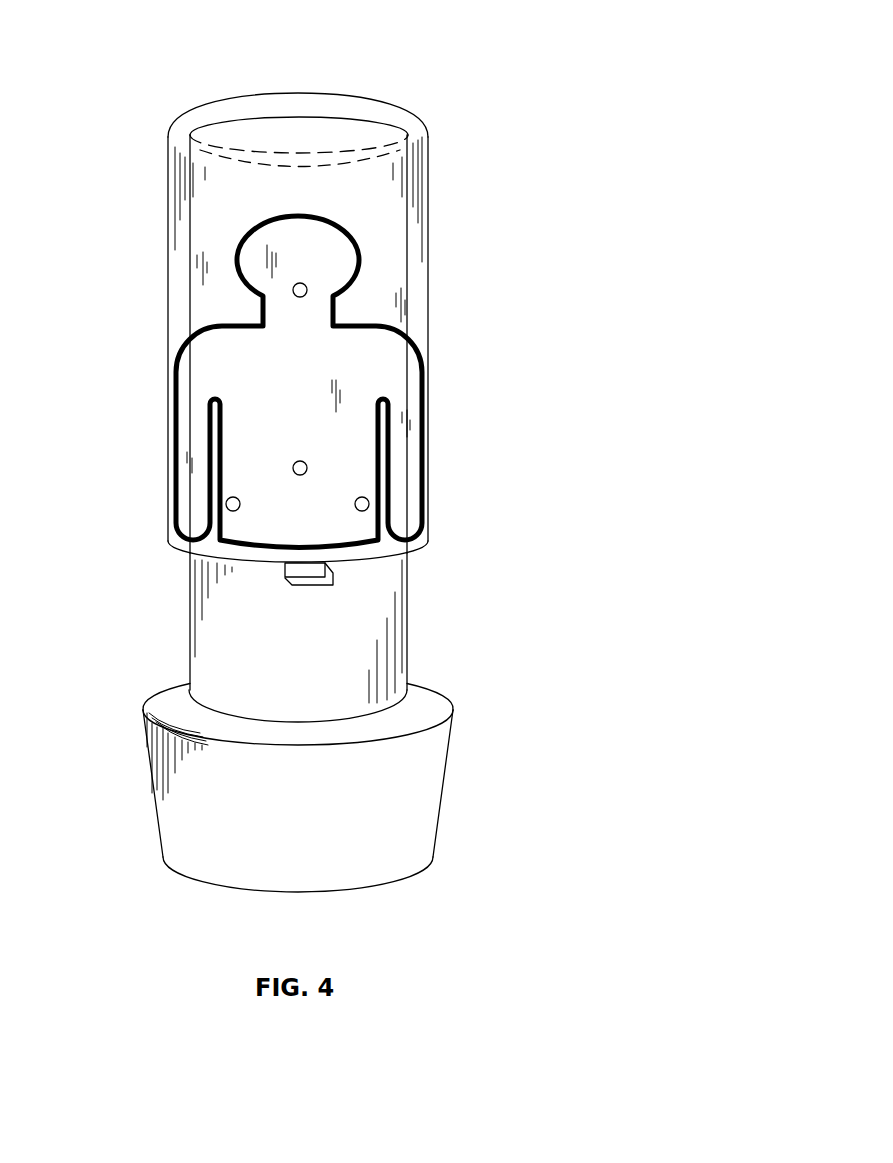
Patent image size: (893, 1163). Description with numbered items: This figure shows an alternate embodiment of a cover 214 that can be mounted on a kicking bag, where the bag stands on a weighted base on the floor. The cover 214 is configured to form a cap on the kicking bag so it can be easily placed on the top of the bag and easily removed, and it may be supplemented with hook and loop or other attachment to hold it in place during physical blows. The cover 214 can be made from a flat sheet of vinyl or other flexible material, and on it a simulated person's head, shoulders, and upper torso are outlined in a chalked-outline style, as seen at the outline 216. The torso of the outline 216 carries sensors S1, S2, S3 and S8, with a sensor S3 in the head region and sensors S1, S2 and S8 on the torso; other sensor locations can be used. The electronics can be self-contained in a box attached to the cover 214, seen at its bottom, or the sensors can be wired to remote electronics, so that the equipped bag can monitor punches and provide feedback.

The cover 214 is at (363, 113).
The simulated person outline 216 is at (236, 243).
The sensor S3 is at (307, 290).
The sensor S8 is at (293, 468).
The sensor S2 is at (226, 504).
The sensor S1 is at (369, 504).